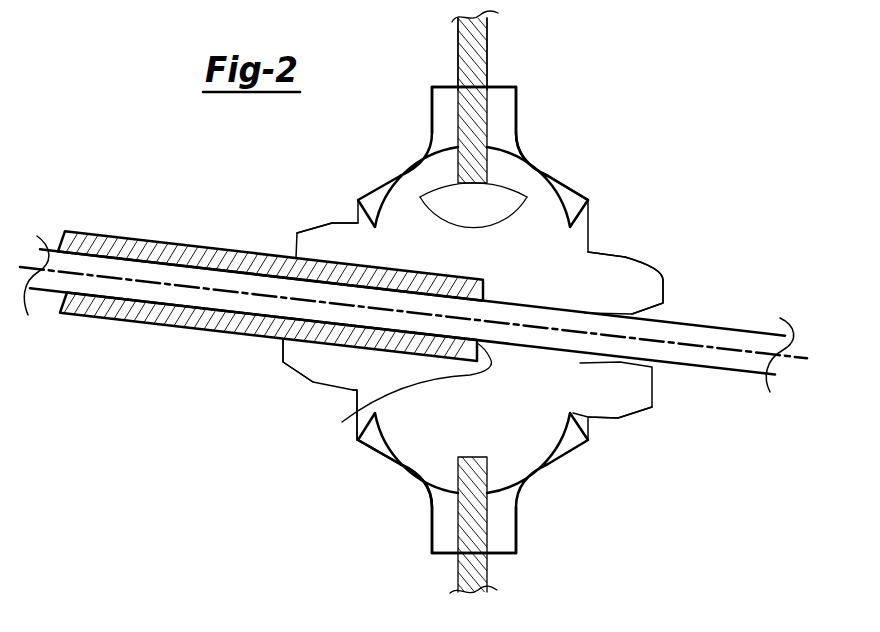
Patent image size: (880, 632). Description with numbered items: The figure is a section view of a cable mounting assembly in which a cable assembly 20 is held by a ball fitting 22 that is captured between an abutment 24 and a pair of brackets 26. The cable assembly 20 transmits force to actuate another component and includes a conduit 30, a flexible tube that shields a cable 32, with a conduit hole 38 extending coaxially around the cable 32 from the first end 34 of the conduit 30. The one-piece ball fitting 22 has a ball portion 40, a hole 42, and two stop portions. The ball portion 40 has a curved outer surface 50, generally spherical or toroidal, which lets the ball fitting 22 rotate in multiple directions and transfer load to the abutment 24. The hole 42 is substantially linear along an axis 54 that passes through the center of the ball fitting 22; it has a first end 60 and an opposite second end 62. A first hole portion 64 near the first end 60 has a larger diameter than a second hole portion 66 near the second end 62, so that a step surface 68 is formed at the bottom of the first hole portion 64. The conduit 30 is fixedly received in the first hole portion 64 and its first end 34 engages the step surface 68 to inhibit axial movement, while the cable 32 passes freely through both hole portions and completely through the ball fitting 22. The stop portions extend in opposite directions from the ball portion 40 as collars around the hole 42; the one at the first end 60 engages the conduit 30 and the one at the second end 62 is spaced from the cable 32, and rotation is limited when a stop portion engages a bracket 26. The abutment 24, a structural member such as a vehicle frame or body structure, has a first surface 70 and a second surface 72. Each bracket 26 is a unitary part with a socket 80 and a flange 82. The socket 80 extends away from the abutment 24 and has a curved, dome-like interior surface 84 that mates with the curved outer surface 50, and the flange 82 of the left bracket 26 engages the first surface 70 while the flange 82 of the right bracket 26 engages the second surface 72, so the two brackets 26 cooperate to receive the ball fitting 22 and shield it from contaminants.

The cable assembly 20 is at (115, 348).
The ball fitting 22 is at (487, 147).
The abutment 24 is at (488, 568).
The bracket 26 is at (430, 115).
The conduit 30 is at (270, 322).
The cable 32 is at (703, 363).
The first end 34 is at (366, 408).
The conduit hole 38 is at (200, 305).
The ball portion 40 is at (550, 170).
The hole 42 is at (590, 310).
The curved outer surface 50 is at (492, 483).
The axis 54 is at (727, 327).
The first end 60 is at (486, 299).
The second end 62 is at (662, 312).
The first hole portion 64 is at (313, 347).
The second hole portion 66 is at (558, 352).
The step surface 68 is at (335, 421).
The first surface 70 is at (457, 50).
The second surface 72 is at (486, 104).
The socket 80 is at (395, 468).
The flange 82 is at (433, 518).
The interior surface 84 is at (473, 220).